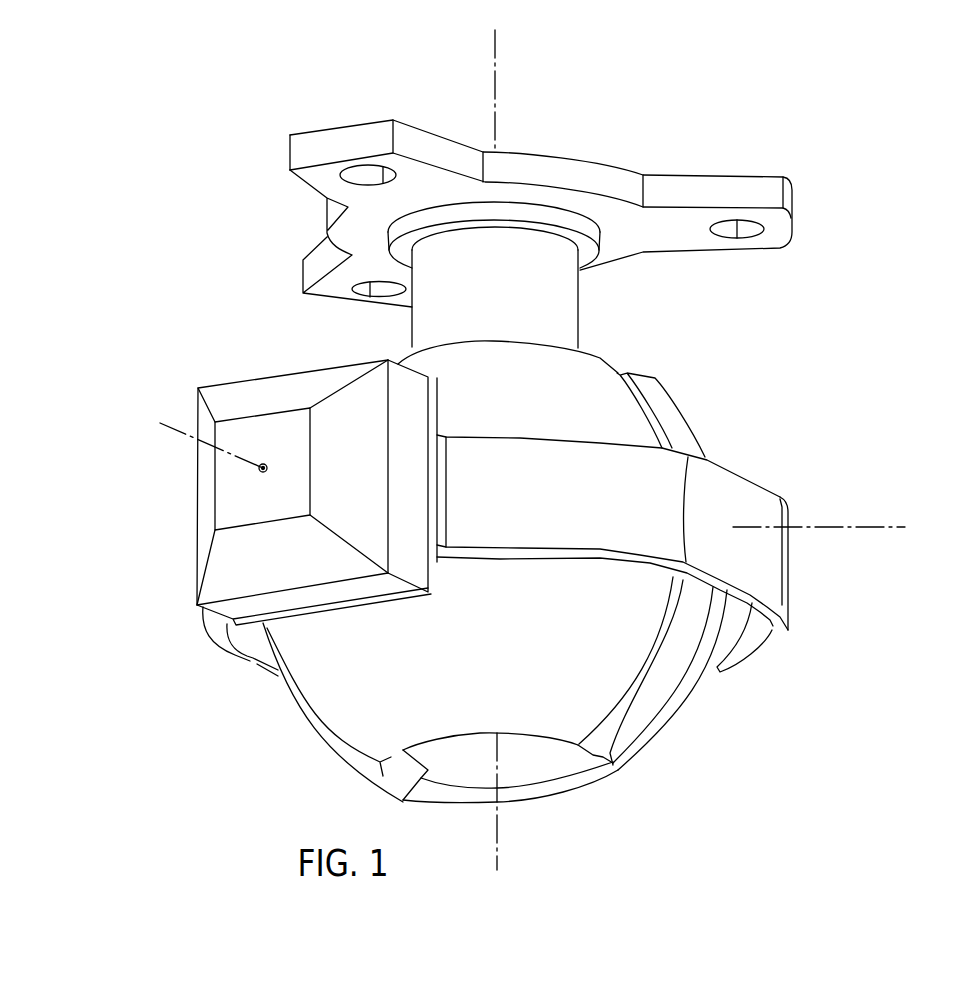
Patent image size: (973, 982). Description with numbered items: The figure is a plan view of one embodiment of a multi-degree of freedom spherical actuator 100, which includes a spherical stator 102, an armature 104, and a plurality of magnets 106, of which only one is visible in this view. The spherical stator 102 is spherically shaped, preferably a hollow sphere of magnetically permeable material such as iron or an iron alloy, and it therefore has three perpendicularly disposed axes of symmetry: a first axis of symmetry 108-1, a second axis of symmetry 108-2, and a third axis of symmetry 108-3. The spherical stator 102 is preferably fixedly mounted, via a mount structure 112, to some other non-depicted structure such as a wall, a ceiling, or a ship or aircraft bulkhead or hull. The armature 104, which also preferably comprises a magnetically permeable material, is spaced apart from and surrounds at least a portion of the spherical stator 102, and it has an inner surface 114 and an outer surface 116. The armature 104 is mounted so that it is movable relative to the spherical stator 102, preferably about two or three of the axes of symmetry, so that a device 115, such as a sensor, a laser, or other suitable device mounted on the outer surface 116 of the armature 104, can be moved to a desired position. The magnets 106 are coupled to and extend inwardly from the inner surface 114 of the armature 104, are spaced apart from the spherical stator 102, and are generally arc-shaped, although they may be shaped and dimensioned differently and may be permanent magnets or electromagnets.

The multi-degree of freedom spherical actuator 100 is at (852, 187).
The spherical stator 102 is at (586, 395).
The armature 104 is at (757, 482).
The magnets 106 is at (757, 619).
The first axis of symmetry 108-1 is at (903, 527).
The second axis of symmetry 108-2 is at (160, 423).
The third axis of symmetry 108-3 is at (495, 82).
The mount structure 112 is at (713, 177).
The inner surface 114 is at (252, 648).
The device 115 is at (215, 379).
The outer surface 116 is at (672, 448).